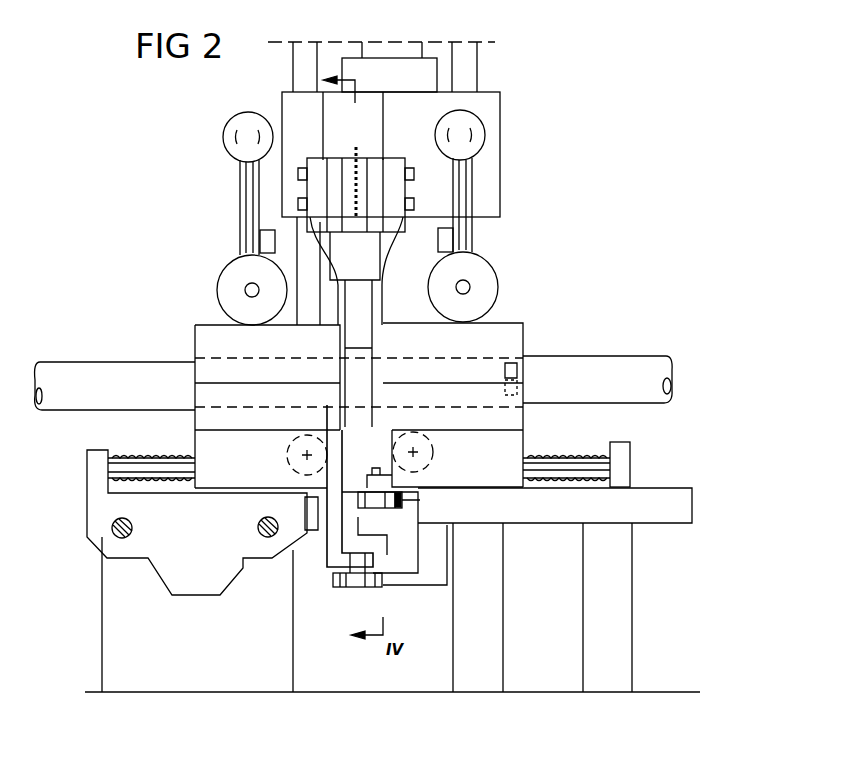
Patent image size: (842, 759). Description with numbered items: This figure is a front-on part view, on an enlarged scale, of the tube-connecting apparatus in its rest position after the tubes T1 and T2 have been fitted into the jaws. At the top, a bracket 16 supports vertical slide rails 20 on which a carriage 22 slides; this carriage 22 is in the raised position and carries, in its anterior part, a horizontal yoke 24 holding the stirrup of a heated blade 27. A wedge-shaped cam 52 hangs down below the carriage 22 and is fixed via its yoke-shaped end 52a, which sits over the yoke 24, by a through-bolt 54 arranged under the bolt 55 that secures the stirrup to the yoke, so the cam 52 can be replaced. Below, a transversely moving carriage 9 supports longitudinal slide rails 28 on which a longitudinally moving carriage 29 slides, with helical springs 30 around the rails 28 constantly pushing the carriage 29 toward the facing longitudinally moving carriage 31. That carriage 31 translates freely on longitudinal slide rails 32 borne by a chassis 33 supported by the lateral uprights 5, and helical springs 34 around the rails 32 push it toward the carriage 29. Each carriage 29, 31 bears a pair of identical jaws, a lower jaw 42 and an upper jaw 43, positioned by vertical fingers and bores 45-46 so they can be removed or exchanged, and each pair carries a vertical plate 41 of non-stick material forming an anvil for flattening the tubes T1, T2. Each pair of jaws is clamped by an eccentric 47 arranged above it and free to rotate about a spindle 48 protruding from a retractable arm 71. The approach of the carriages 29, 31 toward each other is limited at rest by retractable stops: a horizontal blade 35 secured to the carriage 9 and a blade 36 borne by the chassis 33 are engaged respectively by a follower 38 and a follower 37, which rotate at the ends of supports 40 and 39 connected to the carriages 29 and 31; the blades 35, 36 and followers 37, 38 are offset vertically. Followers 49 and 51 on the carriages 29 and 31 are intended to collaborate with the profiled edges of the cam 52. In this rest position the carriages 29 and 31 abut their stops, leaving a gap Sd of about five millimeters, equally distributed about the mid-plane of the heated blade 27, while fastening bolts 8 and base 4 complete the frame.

The base 4 is at (265, 670).
The lateral uprights 5 is at (608, 632).
The fastening bolt 8 is at (111, 531).
The transversely moving carriage 9 is at (196, 572).
The bracket 16 is at (386, 156).
The vertical slide rails 20 is at (468, 62).
The carriage 22 is at (366, 126).
The horizontal yoke 24 is at (332, 185).
The heated blade 27 is at (360, 194).
The slide rails 28 is at (165, 478).
The longitudinally moving carriage 29 is at (228, 478).
The helical springs 30 is at (133, 454).
The longitudinally moving carriage 31 is at (505, 445).
The longitudinal slide rails 32 is at (590, 455).
The chassis 33 is at (722, 470).
The helical springs 34 is at (572, 456).
The horizontal blade 35 is at (312, 535).
The horizontal blade 36 is at (408, 583).
The follower 37 is at (405, 503).
The follower 38 is at (348, 580).
The support 39 is at (400, 482).
The support 40 is at (330, 480).
The vertical plate 41 is at (334, 370).
The lower jaw 42 is at (210, 421).
The upper jaw 43 is at (212, 346).
The vertical fingers and bores 45-46 is at (515, 360).
The eccentric 47 is at (230, 292).
The spindle 48 is at (243, 280).
The follower 49 is at (287, 467).
The follower 51 is at (440, 449).
The wedge-shaped cam 52 is at (370, 308).
The yoke-shaped end 52a is at (315, 187).
The through-bolt 54 is at (414, 205).
The bolt 55 is at (414, 172).
The arm 71 is at (470, 231).
The tube T1 is at (106, 372).
The tube T2 is at (592, 372).